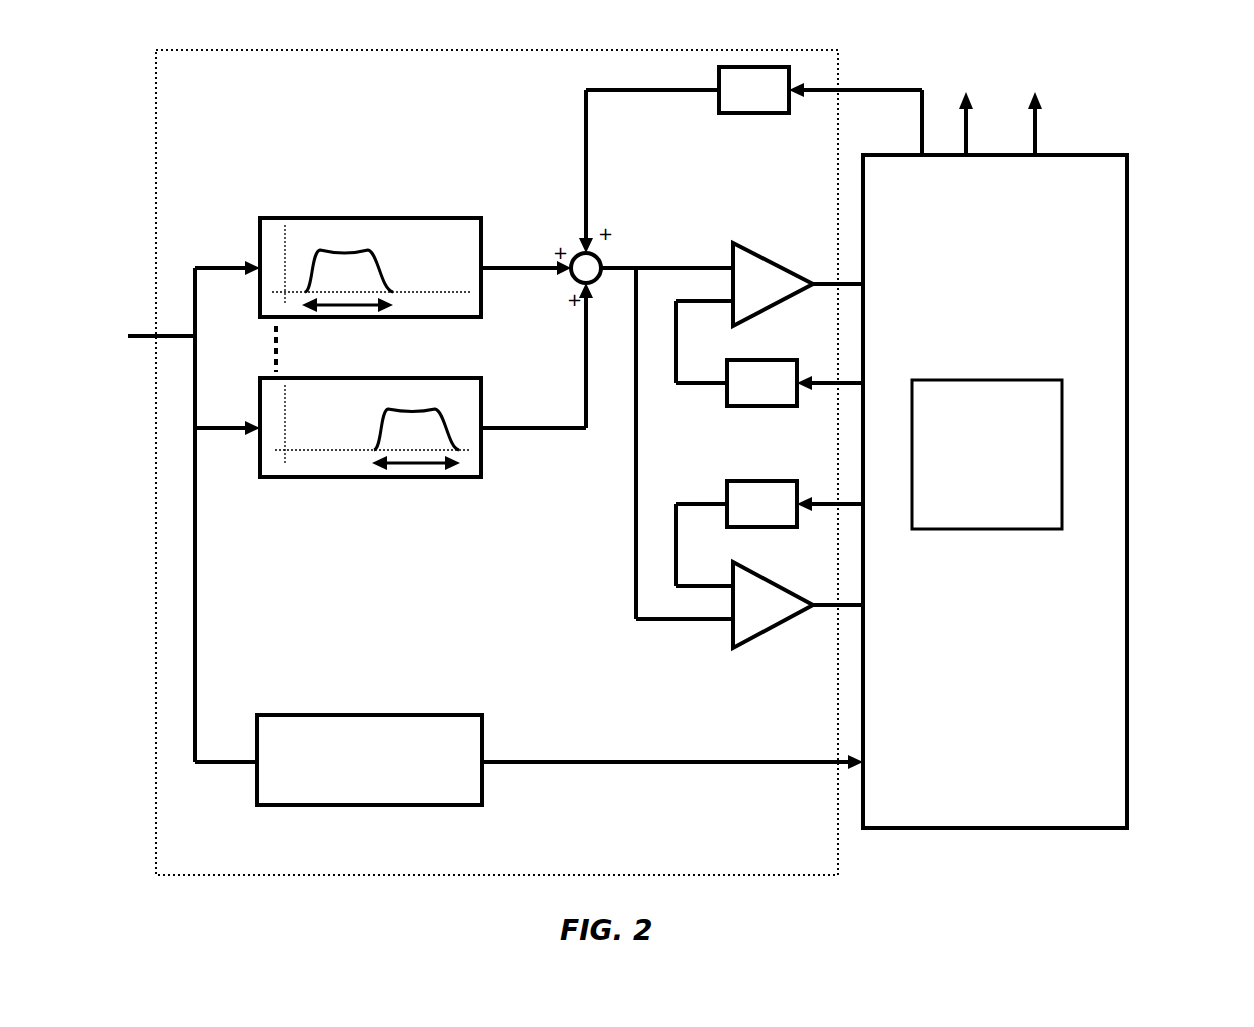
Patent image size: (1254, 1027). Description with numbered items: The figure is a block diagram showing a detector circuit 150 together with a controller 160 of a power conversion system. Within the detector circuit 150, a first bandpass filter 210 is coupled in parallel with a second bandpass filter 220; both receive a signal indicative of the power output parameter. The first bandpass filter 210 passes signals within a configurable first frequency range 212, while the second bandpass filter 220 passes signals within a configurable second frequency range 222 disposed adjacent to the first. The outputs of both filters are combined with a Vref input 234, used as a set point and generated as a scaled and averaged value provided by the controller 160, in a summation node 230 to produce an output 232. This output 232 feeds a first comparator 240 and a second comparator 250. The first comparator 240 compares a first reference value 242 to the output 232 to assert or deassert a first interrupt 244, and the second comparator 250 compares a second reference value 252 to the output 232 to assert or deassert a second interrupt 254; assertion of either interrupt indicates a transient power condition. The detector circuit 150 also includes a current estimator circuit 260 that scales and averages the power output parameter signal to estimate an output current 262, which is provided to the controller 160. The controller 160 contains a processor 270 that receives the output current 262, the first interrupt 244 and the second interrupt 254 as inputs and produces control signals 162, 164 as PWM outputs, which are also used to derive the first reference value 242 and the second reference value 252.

The detector circuit 150 is at (155, 130).
The controller 160 is at (1084, 153).
The control signal 162 is at (963, 130).
The control signal 164 is at (1032, 130).
The first bandpass filter 210 is at (360, 218).
The first frequency range 212 is at (350, 317).
The second bandpass filter 220 is at (340, 478).
The second frequency range 222 is at (418, 470).
The summation node 230 is at (571, 278).
The output 232 is at (613, 262).
The Vref input 234 is at (583, 155).
The first comparator 240 is at (750, 255).
The first reference value 242 is at (674, 355).
The first interrupt 244 is at (857, 288).
The second comparator 250 is at (780, 583).
The second reference value 252 is at (676, 520).
The second interrupt 254 is at (857, 608).
The current estimator circuit 260 is at (397, 715).
The output current 262 is at (753, 762).
The processor 270 is at (967, 492).